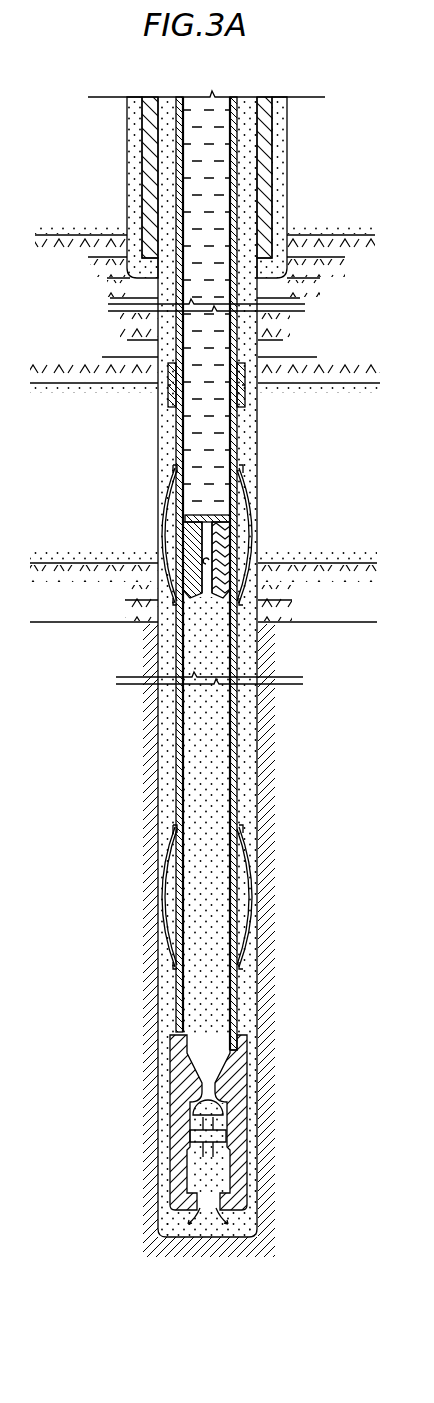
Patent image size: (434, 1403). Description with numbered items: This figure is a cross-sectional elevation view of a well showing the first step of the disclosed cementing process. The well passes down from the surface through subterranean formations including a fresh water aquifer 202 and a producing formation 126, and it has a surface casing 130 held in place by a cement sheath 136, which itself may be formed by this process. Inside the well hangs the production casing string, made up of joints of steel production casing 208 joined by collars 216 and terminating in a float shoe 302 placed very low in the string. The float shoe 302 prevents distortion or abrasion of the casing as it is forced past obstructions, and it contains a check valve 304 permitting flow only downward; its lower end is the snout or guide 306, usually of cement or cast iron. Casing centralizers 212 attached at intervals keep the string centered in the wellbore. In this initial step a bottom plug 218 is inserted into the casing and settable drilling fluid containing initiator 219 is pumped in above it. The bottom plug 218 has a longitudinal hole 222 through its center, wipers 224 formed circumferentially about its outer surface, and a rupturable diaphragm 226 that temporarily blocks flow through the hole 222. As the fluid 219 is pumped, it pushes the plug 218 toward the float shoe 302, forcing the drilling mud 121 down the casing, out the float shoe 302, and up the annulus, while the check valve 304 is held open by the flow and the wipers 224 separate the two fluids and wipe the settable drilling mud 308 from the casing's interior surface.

The drilling mud 121 is at (170, 1000).
The producing formation 126 is at (268, 457).
The surface casing 130 is at (258, 120).
The cement sheath 136 is at (280, 167).
The fresh water aquifer 202 is at (295, 210).
The steel production casing 208 is at (240, 334).
The casing centralizers 212 is at (252, 500).
The collars 216 is at (168, 396).
The bottom plug 218 is at (187, 573).
The settable drilling fluid containing initiator 219 is at (202, 452).
The longitudinal hole 222 is at (202, 543).
The wipers 224 is at (230, 547).
The rupturable diaphragm 226 is at (203, 508).
The float shoe 302 is at (243, 1122).
The check valve 304 is at (215, 1098).
The snout or guide 306 is at (248, 1198).
The settable drilling mud 308 is at (197, 1172).